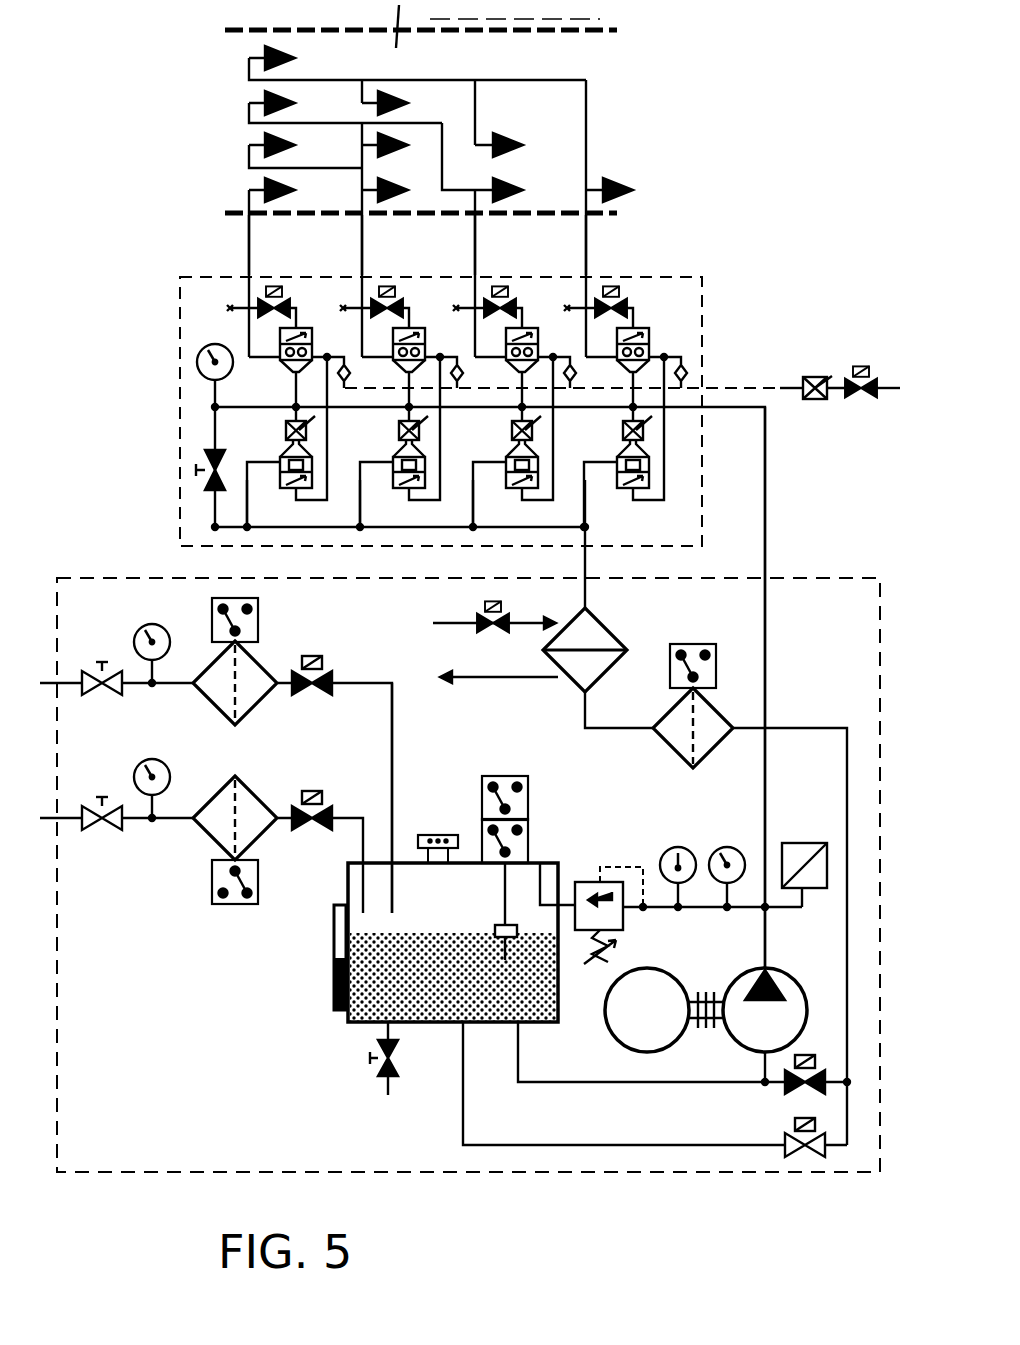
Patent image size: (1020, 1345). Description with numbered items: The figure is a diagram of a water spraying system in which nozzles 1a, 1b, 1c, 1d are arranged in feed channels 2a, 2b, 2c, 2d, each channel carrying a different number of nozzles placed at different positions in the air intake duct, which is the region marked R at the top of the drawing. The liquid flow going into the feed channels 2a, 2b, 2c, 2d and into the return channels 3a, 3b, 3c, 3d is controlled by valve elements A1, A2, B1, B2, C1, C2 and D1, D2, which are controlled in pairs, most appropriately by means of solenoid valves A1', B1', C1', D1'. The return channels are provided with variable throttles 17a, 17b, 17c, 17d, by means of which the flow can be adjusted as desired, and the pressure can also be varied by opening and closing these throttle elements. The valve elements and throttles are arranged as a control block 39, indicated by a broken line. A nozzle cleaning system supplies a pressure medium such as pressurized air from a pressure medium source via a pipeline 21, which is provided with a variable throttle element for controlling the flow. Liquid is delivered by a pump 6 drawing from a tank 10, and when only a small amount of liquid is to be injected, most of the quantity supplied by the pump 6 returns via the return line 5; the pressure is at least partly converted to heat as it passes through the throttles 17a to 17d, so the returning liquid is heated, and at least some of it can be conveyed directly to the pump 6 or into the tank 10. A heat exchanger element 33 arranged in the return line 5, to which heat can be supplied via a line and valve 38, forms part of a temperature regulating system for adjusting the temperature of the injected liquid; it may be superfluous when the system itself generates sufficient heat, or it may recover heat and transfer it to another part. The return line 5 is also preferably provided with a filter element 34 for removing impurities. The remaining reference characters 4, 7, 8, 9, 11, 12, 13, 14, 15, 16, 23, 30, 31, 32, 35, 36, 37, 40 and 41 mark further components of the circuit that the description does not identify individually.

The cylinder lubrication region R is at (405, 24).
The nozzle 1a is at (295, 190).
The nozzle 1b is at (416, 190).
The nozzle 1c is at (530, 190).
The nozzle 1d is at (617, 185).
The feed channel 2a is at (249, 240).
The feed channel 2b is at (362, 258).
The feed channel 2c is at (475, 256).
The feed channel 2d is at (586, 256).
The return channel 3a is at (247, 503).
The return channel 3b is at (360, 503).
The return channel 3c is at (473, 503).
The return channel 3d is at (585, 503).
The pressure line 4 is at (768, 533).
The return line 5 is at (826, 729).
The pump 6 is at (786, 990).
The electric motor 7 is at (623, 1030).
The pressure and temperature gauges 8 is at (657, 900).
The pressure relief valve 9 is at (598, 882).
The tank 10 is at (343, 1012).
The level switch 11 is at (483, 838).
The level switch 12 is at (482, 794).
The shutoff valve 13 is at (318, 828).
The filter with clogging indicator 14 is at (222, 905).
The hand valve 15 is at (105, 829).
The pressure gauge 16 is at (167, 822).
The variable throttle 17a is at (286, 432).
The variable throttle 17b is at (399, 432).
The variable throttle 17c is at (512, 432).
The variable throttle 17d is at (623, 432).
The pressure medium supply line 21 is at (786, 394).
The pilot line 23 is at (686, 386).
The hand valve 30 is at (204, 463).
The sensor 31 is at (823, 380).
The solenoid valve 32 is at (879, 391).
The heat exchanger element 33 is at (605, 631).
The filter element 34 is at (657, 741).
The solenoid valve 35 is at (333, 680).
The filter with clogging indicator 36 is at (208, 668).
The hand valve 37 is at (102, 662).
The valve 38 is at (490, 614).
The control block 39 is at (182, 308).
The supply unit 40 is at (58, 604).
The filling line 41 is at (392, 735).
The valve element A1 is at (314, 364).
The valve element B1 is at (427, 364).
The valve element C1 is at (540, 364).
The valve element D1 is at (651, 360).
The solenoid valve A1' is at (284, 280).
The solenoid valve B1' is at (396, 280).
The solenoid valve C1' is at (505, 280).
The solenoid valve D1' is at (616, 280).
The valve element A2 is at (279, 468).
The valve element B2 is at (392, 468).
The valve element C2 is at (505, 468).
The valve element D2 is at (616, 468).